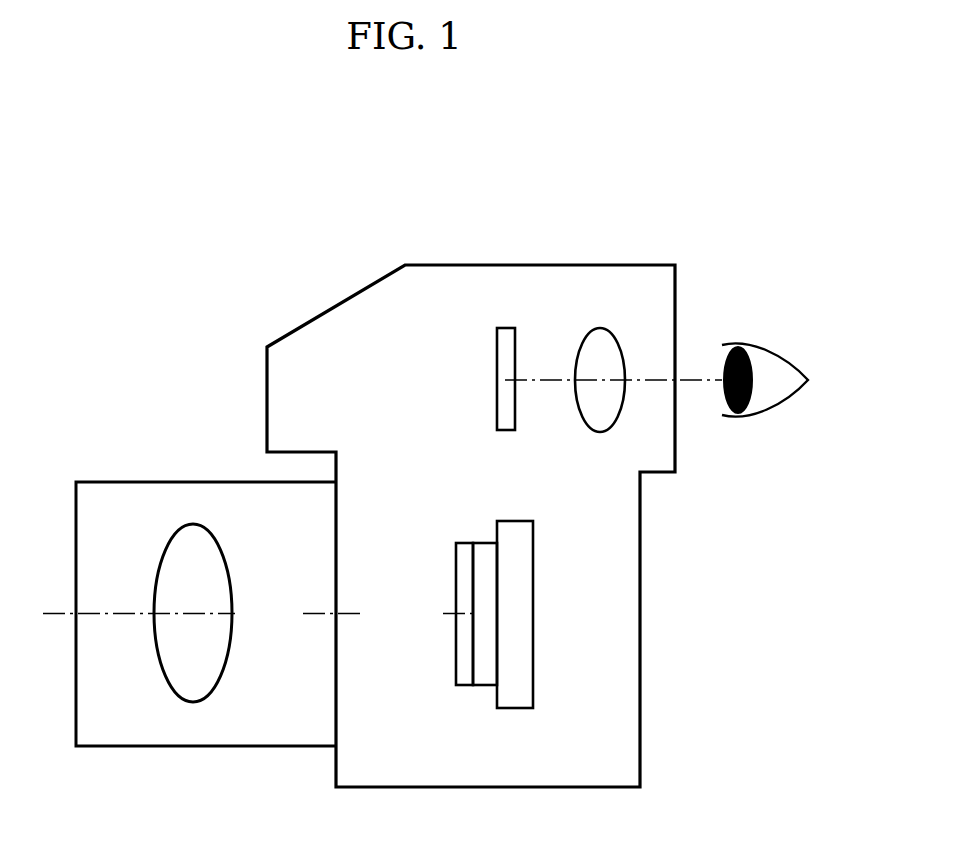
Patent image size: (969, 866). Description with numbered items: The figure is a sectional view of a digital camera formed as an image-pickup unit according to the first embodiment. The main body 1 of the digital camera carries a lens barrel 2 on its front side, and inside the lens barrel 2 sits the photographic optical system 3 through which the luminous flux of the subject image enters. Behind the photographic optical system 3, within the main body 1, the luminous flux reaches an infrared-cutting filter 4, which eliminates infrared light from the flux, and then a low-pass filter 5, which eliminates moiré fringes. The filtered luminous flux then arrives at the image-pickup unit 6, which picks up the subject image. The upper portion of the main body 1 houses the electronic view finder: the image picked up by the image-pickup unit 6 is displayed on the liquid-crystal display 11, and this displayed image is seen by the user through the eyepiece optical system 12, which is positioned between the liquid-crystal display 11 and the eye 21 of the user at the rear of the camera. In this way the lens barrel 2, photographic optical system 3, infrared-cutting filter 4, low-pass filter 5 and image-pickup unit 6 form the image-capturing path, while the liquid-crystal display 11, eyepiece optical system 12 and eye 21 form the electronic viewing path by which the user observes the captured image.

The main body 1 is at (375, 772).
The lens barrel 2 is at (113, 727).
The photographic optical system 3 is at (195, 670).
The infrared-cutting filter 4 is at (463, 678).
The low-pass filter 5 is at (485, 678).
The image-pickup unit 6 is at (518, 645).
The liquid-crystal display 11 is at (505, 340).
The eyepiece optical system 12 is at (600, 340).
The eye of the user 21 is at (771, 353).